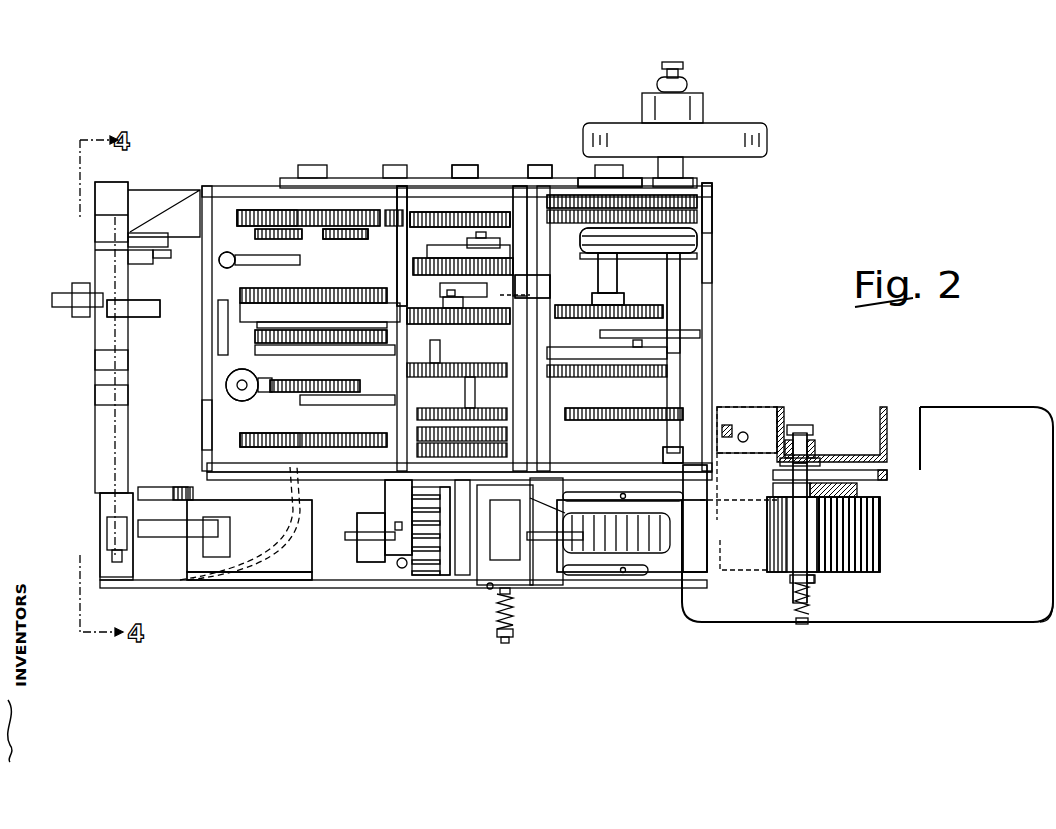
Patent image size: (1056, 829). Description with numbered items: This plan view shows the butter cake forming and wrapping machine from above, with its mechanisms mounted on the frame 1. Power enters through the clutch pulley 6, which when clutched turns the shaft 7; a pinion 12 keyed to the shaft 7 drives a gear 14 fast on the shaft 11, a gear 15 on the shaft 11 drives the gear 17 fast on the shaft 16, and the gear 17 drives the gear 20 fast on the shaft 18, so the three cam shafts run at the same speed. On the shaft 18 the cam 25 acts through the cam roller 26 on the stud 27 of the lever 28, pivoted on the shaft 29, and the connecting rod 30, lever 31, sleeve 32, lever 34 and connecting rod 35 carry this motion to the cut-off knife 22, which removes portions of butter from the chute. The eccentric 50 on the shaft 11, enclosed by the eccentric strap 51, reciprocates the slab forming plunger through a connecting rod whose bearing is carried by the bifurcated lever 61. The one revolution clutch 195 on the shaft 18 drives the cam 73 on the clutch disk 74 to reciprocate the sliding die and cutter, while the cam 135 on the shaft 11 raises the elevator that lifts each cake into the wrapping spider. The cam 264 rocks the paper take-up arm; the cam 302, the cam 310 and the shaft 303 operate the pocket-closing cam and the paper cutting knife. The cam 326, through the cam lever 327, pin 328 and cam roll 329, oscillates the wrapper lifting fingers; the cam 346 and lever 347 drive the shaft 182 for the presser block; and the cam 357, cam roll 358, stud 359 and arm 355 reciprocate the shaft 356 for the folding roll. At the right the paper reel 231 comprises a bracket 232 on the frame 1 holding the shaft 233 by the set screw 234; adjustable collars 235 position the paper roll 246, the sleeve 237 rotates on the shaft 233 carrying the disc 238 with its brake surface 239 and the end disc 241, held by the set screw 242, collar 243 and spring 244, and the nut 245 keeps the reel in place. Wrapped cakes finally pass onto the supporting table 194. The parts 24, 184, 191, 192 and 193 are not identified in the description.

The frame 1 is at (715, 228).
The clutch pulley 6 is at (627, 125).
The shaft 7 is at (600, 265).
The shaft 11 is at (560, 272).
The pinion 12 is at (713, 215).
The gear 14 is at (580, 187).
The gear 15 is at (542, 187).
The shaft 16 is at (445, 250).
The gear 17 is at (460, 257).
The shaft 18 is at (272, 235).
The gear 20 is at (248, 212).
The cut-off knife 22 is at (280, 567).
The base plate 24 is at (293, 582).
The cam 25 is at (300, 338).
The cam roller 26 is at (270, 345).
The stud 27 is at (290, 378).
The lever 28 is at (277, 293).
The shaft 29 is at (360, 470).
The connecting rod 30 is at (137, 305).
The lever 31 is at (100, 358).
The sleeve 32 is at (100, 393).
The lever 34 is at (100, 502).
The connecting rod 35 is at (178, 555).
The eccentric 50 is at (740, 200).
The eccentric strap 51 is at (715, 220).
The bifurcated lever 61 is at (93, 225).
The cam 73 is at (267, 432).
The clutch disk 74 is at (235, 455).
The cam 135 is at (700, 368).
The shaft 182 is at (630, 292).
The shaft 184 is at (700, 352).
The housing 191 is at (633, 572).
The housing end 192 is at (670, 560).
The grille 193 is at (598, 555).
The supporting table 194 is at (1012, 625).
The one revolution clutch 195 is at (205, 428).
The reel 231 is at (840, 573).
The bracket 232 is at (818, 450).
The shaft 233 is at (795, 442).
The set screw 234 is at (817, 445).
The adjustable collars 235 is at (885, 477).
The sleeve 237 is at (810, 530).
The disc 238 is at (857, 497).
The brake surface 239 is at (887, 473).
The disc 241 is at (817, 580).
The set screw 242 is at (833, 583).
The collar 243 is at (785, 590).
The spring 244 is at (793, 600).
The nut 245 is at (793, 613).
The roll 246 is at (877, 563).
The cam 264 is at (700, 417).
The cam 302 is at (433, 575).
The shaft 303 is at (417, 290).
The cam 310 is at (375, 560).
The cam 326 is at (200, 190).
The cam lever 327 is at (347, 240).
The pin 328 is at (337, 300).
The cam roll 329 is at (350, 220).
The cam 346 is at (525, 290).
The lever 347 is at (467, 270).
The arm 355 is at (470, 210).
The shaft 356 is at (620, 303).
The cam 357 is at (700, 352).
The cam roll 358 is at (420, 300).
The stud 359 is at (430, 320).